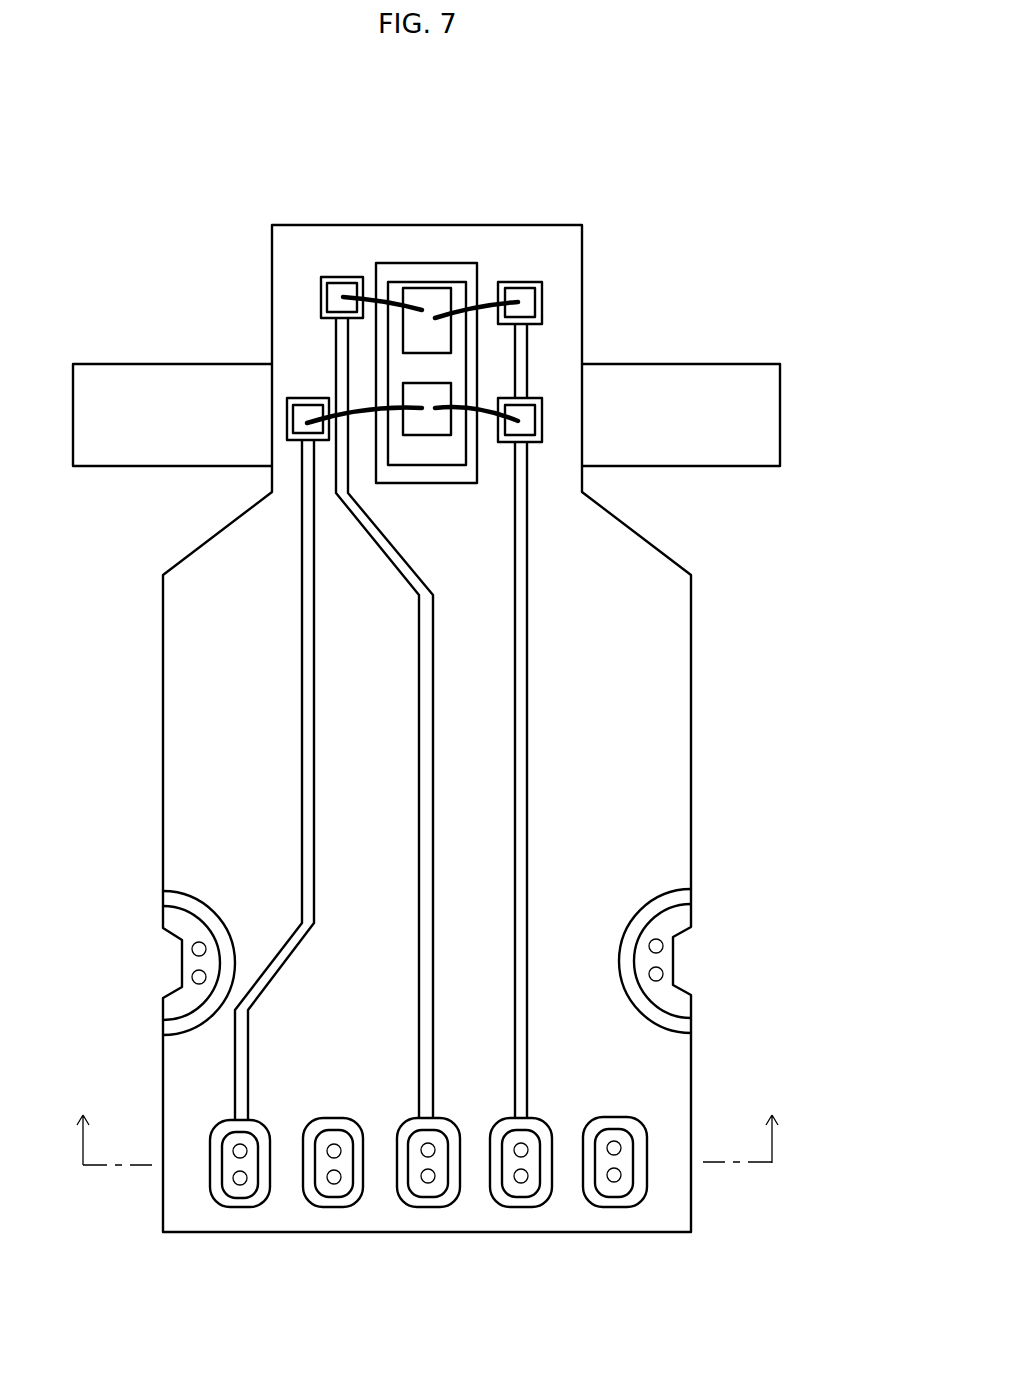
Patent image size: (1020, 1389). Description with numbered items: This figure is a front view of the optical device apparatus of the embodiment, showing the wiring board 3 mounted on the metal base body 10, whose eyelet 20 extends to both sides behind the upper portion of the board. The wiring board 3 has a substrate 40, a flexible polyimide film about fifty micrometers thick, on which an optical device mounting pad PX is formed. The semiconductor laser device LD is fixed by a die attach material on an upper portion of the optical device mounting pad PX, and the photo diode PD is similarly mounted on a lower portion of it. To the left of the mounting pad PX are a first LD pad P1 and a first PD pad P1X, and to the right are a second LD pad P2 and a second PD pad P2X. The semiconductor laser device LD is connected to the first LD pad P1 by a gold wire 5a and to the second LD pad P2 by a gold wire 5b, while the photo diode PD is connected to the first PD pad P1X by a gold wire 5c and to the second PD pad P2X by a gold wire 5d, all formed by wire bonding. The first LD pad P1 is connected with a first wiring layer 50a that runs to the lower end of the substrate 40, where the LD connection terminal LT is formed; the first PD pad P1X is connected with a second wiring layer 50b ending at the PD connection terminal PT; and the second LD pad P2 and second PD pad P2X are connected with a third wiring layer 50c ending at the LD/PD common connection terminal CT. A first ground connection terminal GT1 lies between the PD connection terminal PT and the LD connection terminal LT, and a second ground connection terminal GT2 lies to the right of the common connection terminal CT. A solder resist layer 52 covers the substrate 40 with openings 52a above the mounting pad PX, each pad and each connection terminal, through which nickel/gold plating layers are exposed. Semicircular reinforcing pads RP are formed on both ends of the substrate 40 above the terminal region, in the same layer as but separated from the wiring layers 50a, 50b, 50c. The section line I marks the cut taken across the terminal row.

The metal base body 10 is at (757, 344).
The eyelet 20 is at (663, 385).
The wiring board 3 is at (707, 592).
The substrate 40 is at (690, 728).
The solder resist layer 52 is at (680, 777).
The openings 52a is at (452, 294).
The reinforcing pads RP is at (678, 918).
The semiconductor laser device LD is at (425, 288).
The optical device mounting pad PX is at (412, 288).
The photo diode PD is at (422, 382).
The first LD pad P1 is at (342, 277).
The second LD pad P2 is at (519, 290).
The first PD pad P1X is at (287, 418).
The second PD pad P2X is at (542, 417).
The gold wire 5a is at (372, 293).
The gold wire 5b is at (485, 303).
The gold wire 5c is at (357, 416).
The gold wire 5d is at (463, 413).
The first wiring layer 50a is at (418, 686).
The second wiring layer 50b is at (307, 735).
The third wiring layer 50c is at (525, 697).
The PD connection terminal PT is at (240, 1207).
The first ground connection terminal GT1 is at (318, 1207).
The LD connection terminal LT is at (430, 1207).
The LD/PD common connection terminal CT is at (521, 1207).
The second ground connection terminal GT2 is at (618, 1207).
The section line I is at (427, 1122).